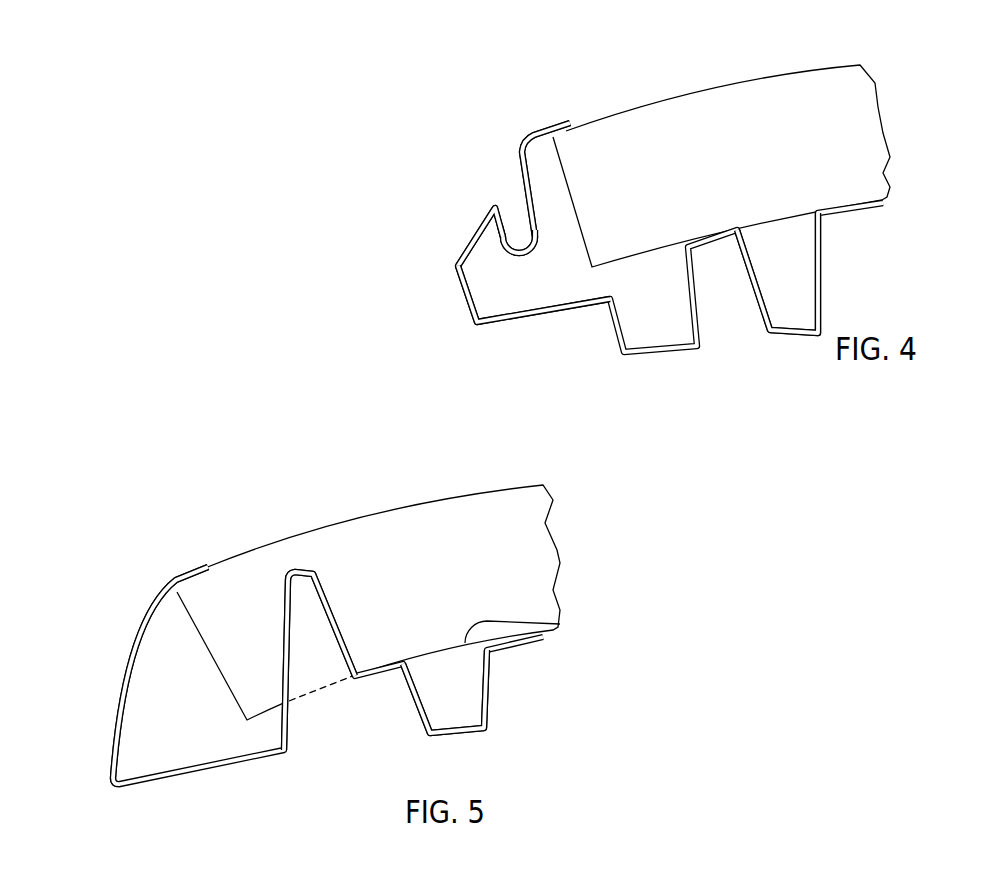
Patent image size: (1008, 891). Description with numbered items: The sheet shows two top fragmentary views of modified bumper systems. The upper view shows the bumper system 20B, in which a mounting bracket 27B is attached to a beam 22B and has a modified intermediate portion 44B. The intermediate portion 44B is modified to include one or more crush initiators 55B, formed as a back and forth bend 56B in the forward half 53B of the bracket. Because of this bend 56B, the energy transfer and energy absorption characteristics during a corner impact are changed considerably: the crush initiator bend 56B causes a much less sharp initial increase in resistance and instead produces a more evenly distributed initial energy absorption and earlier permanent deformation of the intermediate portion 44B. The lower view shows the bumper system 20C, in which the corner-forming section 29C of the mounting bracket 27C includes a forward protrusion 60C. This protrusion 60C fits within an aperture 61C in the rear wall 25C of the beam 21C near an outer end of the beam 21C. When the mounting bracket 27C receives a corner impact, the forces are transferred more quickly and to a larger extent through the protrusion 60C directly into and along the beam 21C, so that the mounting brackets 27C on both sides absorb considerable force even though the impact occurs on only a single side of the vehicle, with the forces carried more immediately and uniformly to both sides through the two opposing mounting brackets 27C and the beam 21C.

In FIG. 4, the panel 22B is at (670, 98).
In FIG. 4, the bumper system 20B is at (388, 273).
In FIG. 4, the crush initiator 55B is at (512, 185).
In FIG. 4, the back and forth bend 56B is at (528, 256).
In FIG. 4, the forward half 53B is at (478, 228).
In FIG. 4, the intermediate portion 44B is at (460, 286).
In FIG. 4, the mounting bracket 27B is at (789, 371).
In FIG. 5, the beam 21C is at (489, 486).
In FIG. 5, the aperture 61C is at (322, 683).
In FIG. 5, the rear wall 25C is at (548, 617).
In FIG. 5, the bumper system 20C is at (270, 787).
In FIG. 5, the corner-forming section 29C is at (127, 657).
In FIG. 5, the forward protrusion 60C is at (297, 603).
In FIG. 5, the mounting bracket 27C is at (508, 707).